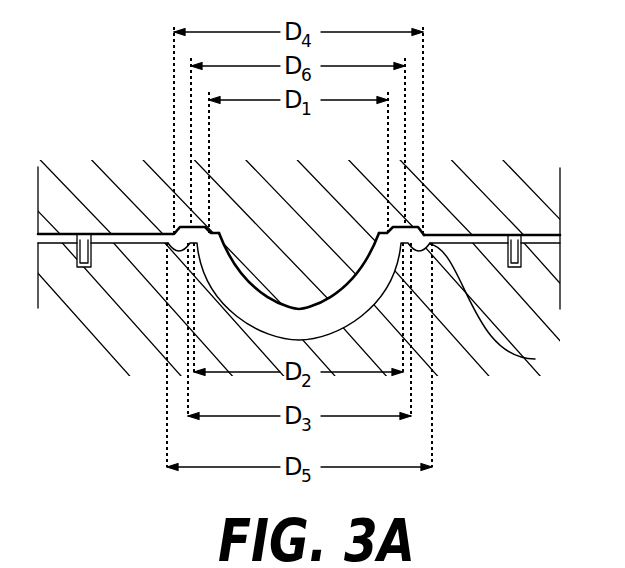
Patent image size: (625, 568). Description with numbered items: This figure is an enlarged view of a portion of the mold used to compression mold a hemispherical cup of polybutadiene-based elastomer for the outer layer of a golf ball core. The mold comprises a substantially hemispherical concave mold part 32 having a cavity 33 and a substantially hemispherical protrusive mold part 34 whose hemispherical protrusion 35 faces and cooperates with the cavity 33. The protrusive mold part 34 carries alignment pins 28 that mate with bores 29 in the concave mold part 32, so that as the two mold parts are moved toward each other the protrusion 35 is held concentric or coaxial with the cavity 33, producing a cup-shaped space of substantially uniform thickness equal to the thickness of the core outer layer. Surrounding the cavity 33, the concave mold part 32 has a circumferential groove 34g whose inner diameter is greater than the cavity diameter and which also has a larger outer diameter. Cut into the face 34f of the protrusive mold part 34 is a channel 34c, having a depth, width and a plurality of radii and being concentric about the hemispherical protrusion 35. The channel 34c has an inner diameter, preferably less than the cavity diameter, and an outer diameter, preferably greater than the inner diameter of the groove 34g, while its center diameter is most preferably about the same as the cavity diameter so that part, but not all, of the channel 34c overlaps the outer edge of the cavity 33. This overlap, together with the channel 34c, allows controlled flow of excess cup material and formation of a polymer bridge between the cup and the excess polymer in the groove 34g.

The alignment pin 28 is at (82, 234).
The bore 29 is at (84, 268).
The concave mold part 32 is at (159, 317).
The cavity 33 is at (232, 311).
The protrusive mold part 34 is at (139, 163).
The channel 34c is at (410, 229).
The face 34f is at (482, 234).
The circumferential groove 34g is at (534, 359).
The hemispherical protrusion 35 is at (326, 275).